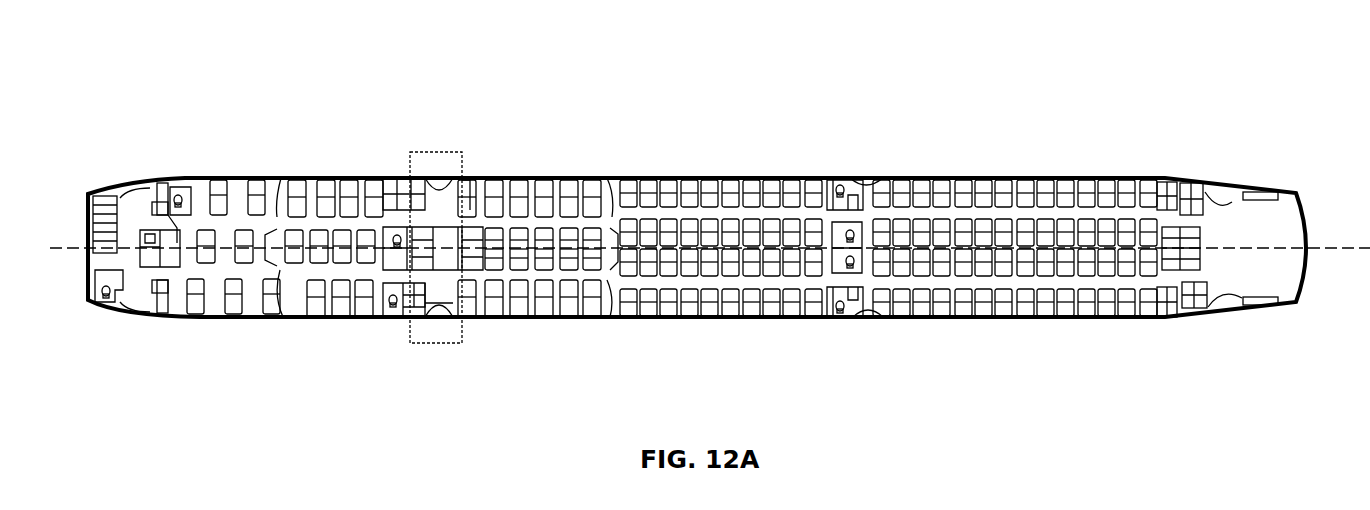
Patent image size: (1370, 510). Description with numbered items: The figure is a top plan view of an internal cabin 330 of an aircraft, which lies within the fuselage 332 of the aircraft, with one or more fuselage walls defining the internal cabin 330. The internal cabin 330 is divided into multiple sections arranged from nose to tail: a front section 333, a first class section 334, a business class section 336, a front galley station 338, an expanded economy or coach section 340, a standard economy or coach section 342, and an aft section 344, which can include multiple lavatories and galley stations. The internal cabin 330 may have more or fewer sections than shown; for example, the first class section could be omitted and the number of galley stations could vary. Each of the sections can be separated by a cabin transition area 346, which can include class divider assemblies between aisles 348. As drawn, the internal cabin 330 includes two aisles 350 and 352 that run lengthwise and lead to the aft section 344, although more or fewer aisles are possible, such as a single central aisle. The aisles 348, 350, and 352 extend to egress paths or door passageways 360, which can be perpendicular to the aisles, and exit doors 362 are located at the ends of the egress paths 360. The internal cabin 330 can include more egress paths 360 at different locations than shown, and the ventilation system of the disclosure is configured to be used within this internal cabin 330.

The internal cabin 330 is at (226, 78).
The fuselage 332 is at (557, 100).
The front section 333 is at (146, 334).
The first class section 334 is at (243, 318).
The business class section 336 is at (315, 177).
The front galley station 338 is at (430, 337).
The expanded economy or coach section 340 is at (535, 320).
The standard economy or coach section 342 is at (663, 177).
The aft section 344 is at (1232, 203).
The cabin transition area 346 is at (162, 177).
The aisles 348 is at (405, 214).
The aisle 350 is at (1023, 213).
The aisle 352 is at (1043, 283).
The egress paths or door passageways 360 is at (445, 205).
The exit doors 362 is at (440, 178).